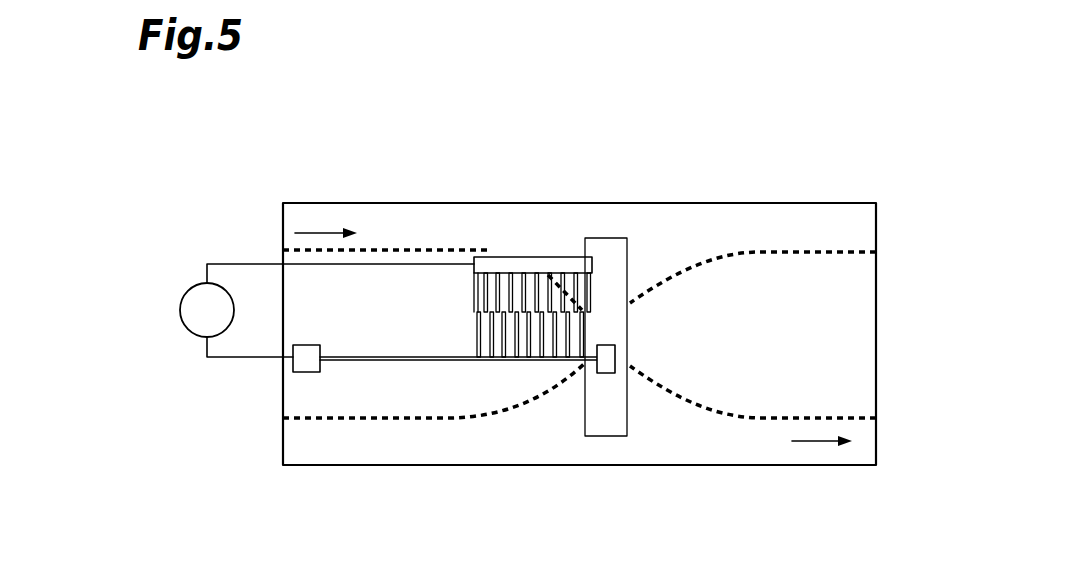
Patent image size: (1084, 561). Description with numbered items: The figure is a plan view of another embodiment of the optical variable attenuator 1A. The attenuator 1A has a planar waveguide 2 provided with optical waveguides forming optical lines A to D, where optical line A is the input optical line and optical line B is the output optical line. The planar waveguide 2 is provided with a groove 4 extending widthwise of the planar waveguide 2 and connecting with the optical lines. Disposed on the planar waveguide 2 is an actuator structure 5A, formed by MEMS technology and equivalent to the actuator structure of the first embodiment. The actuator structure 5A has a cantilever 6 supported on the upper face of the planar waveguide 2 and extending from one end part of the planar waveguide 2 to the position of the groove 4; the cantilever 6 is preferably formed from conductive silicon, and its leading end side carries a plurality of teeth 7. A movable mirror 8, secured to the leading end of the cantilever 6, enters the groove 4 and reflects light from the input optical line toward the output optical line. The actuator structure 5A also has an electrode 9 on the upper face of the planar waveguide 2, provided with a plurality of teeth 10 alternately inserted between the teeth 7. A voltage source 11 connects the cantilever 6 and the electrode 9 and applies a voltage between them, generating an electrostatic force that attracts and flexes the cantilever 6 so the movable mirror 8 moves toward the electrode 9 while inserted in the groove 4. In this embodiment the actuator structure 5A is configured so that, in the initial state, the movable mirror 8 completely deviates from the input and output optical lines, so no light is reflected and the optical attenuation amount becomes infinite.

The optical variable attenuator 1A is at (814, 85).
The planar waveguide 2 is at (877, 333).
The groove 4 is at (602, 437).
The actuator structure 5A is at (336, 376).
The cantilever 6 is at (413, 362).
The teeth 7 is at (478, 338).
The movable mirror 8 is at (610, 356).
The electrode 9 is at (562, 262).
The teeth 10 is at (502, 251).
The voltage source 11 is at (180, 312).